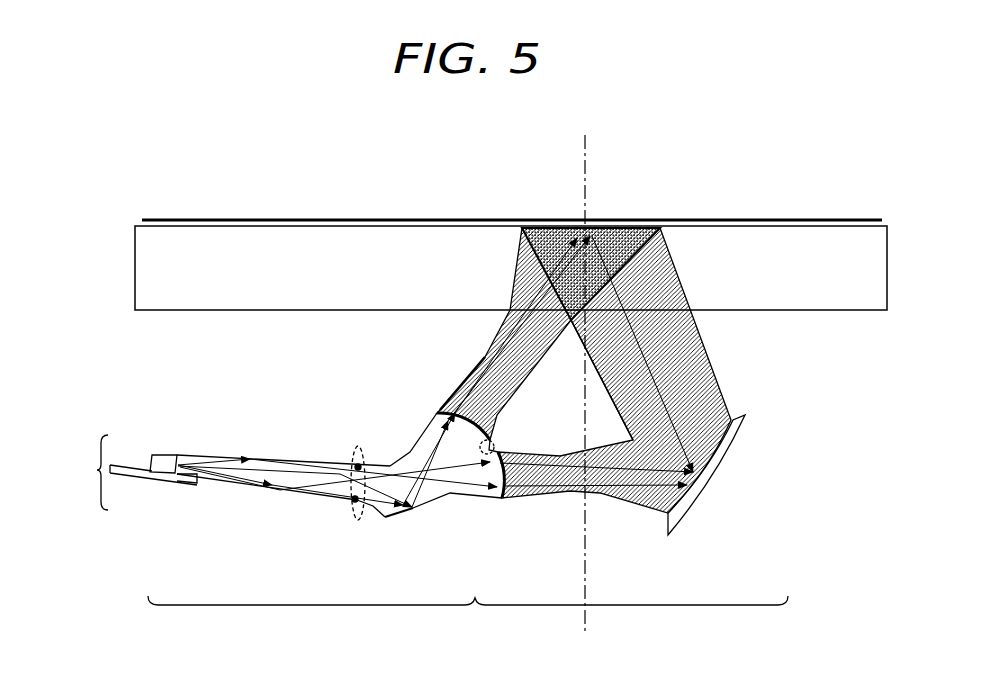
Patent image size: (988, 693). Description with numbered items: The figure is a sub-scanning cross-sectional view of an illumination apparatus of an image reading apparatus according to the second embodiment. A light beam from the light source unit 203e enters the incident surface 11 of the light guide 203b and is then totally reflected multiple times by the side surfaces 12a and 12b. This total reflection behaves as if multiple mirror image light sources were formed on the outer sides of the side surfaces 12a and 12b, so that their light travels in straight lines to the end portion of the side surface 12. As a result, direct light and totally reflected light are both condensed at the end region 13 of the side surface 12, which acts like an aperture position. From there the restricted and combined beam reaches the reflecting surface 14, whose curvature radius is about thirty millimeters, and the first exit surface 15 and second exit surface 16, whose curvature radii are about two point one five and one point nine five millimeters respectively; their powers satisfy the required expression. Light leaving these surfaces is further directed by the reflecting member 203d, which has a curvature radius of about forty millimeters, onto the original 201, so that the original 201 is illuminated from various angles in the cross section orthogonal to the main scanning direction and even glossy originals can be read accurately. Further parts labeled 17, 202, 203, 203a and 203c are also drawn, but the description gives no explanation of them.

The incident surface 11 is at (178, 472).
The side surface 12 is at (150, 343).
The side surface 12a is at (227, 457).
The side surface 12b is at (212, 480).
The end region 13 is at (362, 443).
The reflecting surface 14 is at (437, 507).
The first exit surface 15 is at (462, 408).
The second exit surface 16 is at (507, 502).
The hinge portion 17 is at (498, 443).
The original 201 is at (588, 217).
The platen glass 202 is at (728, 233).
The image reading unit 203 is at (468, 389).
The light source holder 203a is at (152, 455).
The light guide 203b is at (287, 465).
The circuit board 203c is at (133, 478).
The reflecting member 203d is at (743, 415).
The light source unit 203e is at (74, 472).